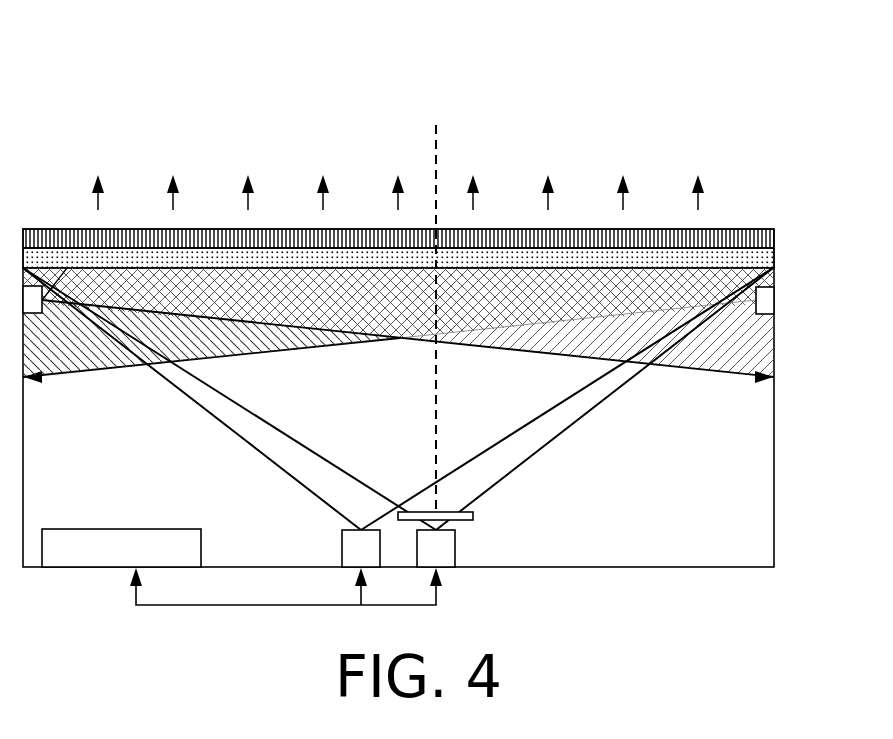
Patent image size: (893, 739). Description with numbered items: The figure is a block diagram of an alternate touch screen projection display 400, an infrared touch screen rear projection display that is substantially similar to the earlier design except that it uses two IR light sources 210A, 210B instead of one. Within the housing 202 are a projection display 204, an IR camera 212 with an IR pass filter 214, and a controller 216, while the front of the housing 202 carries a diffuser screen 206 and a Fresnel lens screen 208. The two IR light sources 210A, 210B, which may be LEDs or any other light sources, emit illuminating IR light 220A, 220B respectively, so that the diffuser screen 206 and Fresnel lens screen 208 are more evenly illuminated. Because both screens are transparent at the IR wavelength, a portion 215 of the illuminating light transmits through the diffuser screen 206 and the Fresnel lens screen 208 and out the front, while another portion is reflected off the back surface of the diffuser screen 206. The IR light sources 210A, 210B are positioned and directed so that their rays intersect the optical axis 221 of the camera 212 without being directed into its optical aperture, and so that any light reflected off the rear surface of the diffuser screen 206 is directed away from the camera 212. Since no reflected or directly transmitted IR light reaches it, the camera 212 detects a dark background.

The touch screen projection display 400 is at (120, 72).
The housing 202 is at (774, 527).
The projection display 204 is at (340, 555).
The diffuser screen 206 is at (774, 251).
The Fresnel lens screen 208 is at (774, 230).
The first IR light source 210A is at (33, 314).
The second IR light source 210B is at (774, 305).
The IR camera 212 is at (457, 555).
The IR pass filter 214 is at (474, 516).
The transmitted portion of IR light 215 is at (703, 192).
The controller 216 is at (100, 529).
The first illuminating IR light 220A is at (547, 353).
The second illuminating IR light 220B is at (97, 373).
The optical axis 221 is at (436, 158).